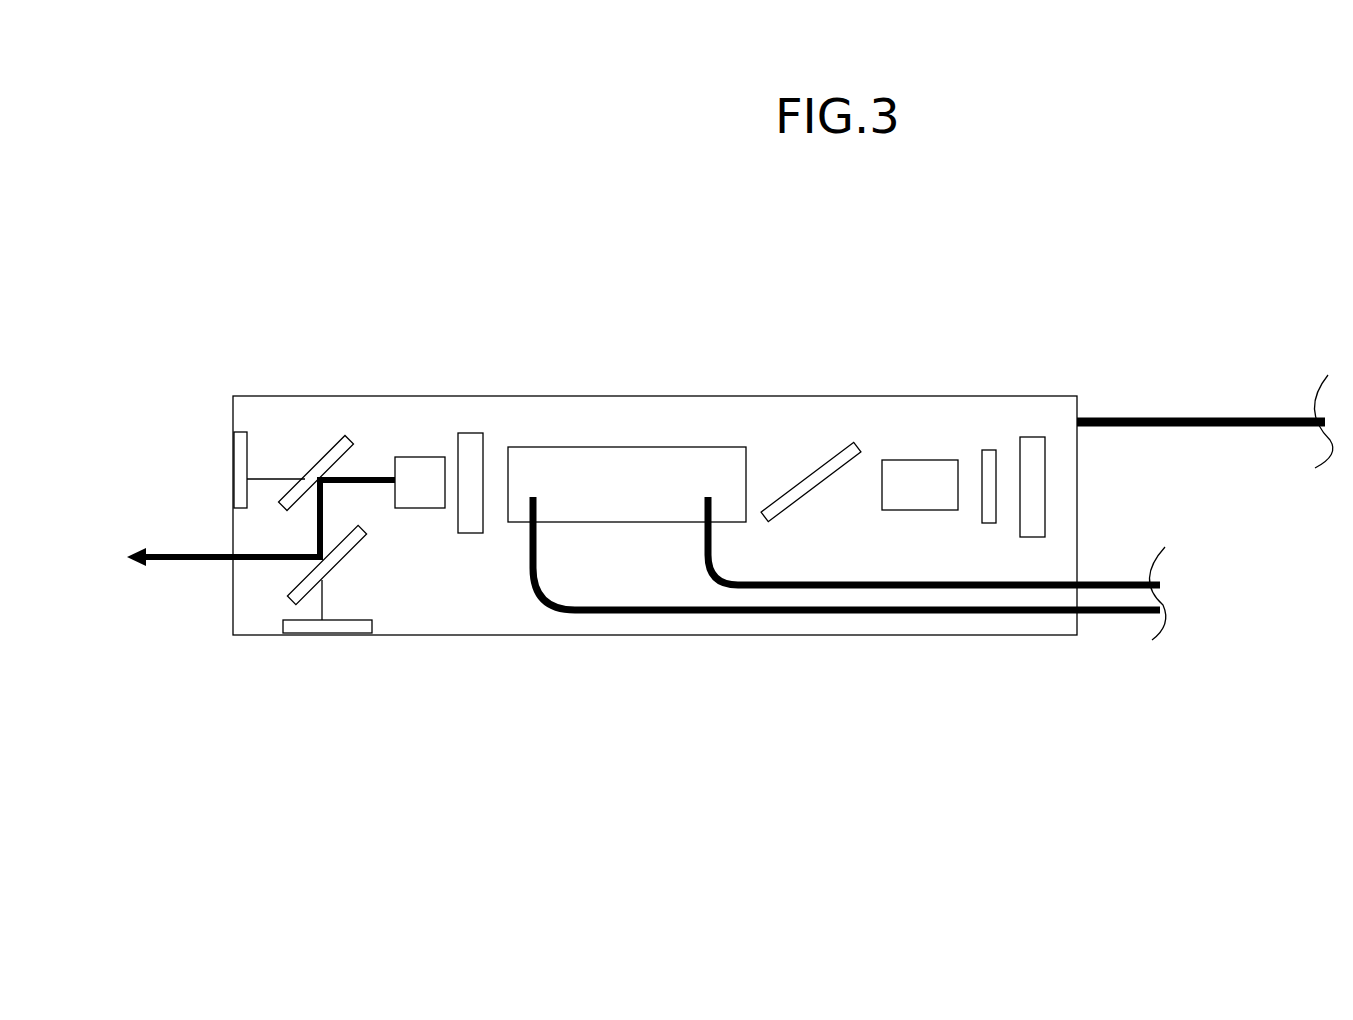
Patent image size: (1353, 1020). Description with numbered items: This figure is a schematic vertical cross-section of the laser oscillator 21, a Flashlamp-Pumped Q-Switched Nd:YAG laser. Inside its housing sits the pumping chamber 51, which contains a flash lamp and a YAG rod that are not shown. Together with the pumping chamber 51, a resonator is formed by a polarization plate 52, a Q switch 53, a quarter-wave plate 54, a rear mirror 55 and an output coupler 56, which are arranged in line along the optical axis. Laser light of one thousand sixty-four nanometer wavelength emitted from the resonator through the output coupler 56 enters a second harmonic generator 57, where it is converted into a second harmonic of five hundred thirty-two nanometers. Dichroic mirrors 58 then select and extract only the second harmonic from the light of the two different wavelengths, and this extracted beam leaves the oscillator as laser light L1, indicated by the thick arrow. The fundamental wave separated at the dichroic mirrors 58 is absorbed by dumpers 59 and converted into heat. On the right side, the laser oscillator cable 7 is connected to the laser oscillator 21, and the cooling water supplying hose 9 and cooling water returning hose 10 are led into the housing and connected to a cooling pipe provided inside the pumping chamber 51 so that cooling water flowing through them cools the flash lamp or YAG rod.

The laser oscillator cable 7 is at (1178, 415).
The cooling water supplying hose 9 is at (993, 588).
The cooling water returning hose 10 is at (803, 610).
The laser oscillator 21 is at (662, 635).
The pumping chamber 51 is at (623, 463).
The polarization plate 52 is at (828, 465).
The Q switch 53 is at (927, 463).
The λ/4 plate 54 is at (988, 452).
The rear mirror 55 is at (1038, 440).
The output coupler 56 is at (468, 433).
The second harmonic generator 57 is at (418, 462).
The dichroic mirror 58 is at (323, 462).
The dumper 59 is at (240, 463).
The laser light L1 is at (192, 552).